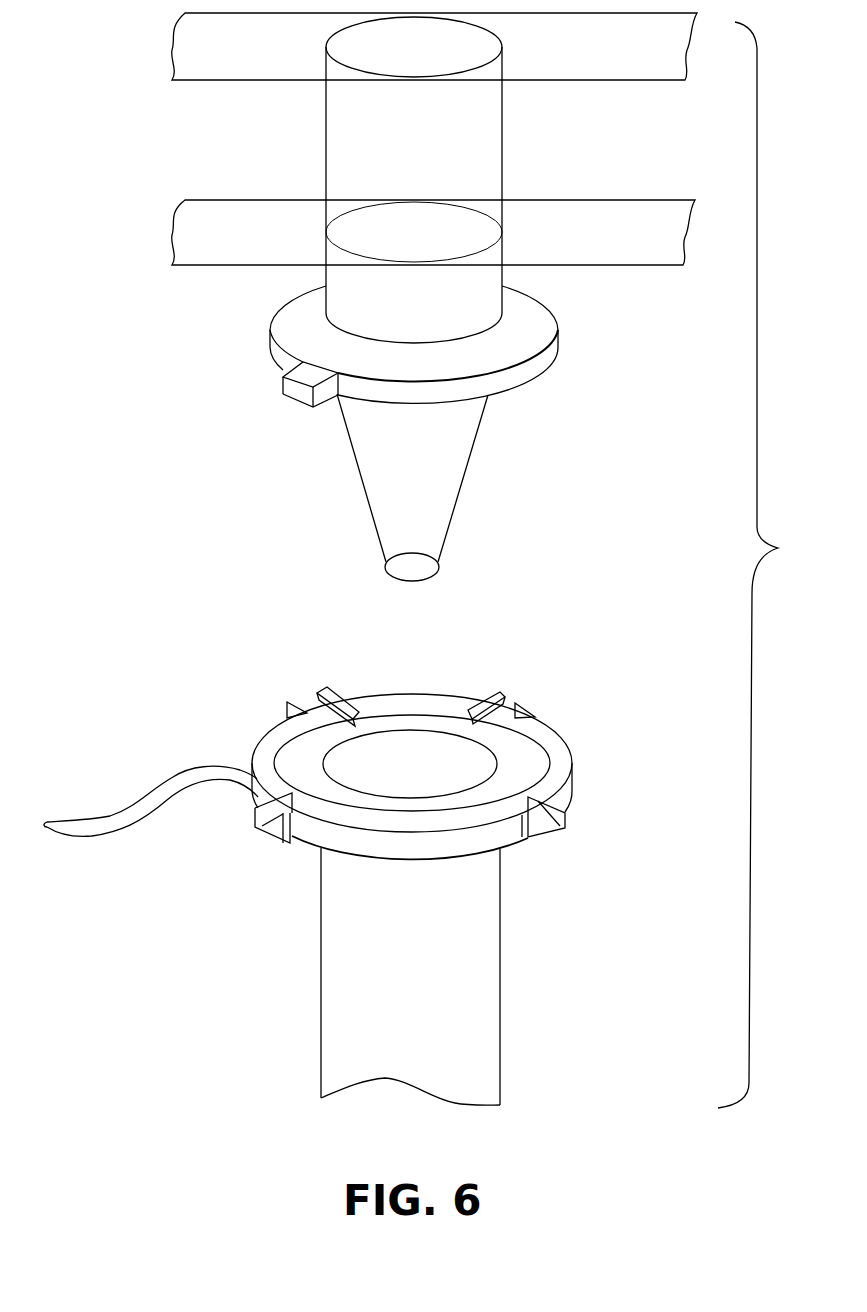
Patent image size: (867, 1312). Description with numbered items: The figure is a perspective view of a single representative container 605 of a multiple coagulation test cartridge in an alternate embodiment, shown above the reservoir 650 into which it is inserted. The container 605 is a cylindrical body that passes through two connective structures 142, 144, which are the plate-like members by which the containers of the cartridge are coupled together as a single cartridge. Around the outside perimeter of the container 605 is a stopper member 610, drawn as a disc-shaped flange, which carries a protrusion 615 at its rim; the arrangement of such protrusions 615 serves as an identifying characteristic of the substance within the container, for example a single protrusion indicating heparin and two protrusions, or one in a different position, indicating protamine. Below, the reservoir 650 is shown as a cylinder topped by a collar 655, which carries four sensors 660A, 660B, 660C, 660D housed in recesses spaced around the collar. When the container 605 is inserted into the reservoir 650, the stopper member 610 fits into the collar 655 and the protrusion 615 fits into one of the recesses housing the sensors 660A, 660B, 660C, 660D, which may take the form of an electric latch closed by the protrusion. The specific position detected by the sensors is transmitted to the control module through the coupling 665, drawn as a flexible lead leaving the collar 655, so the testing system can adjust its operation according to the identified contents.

The connective structure 142 is at (633, 58).
The connective structure 144 is at (640, 248).
The container 605 is at (428, 173).
The stopper member 610 is at (560, 337).
The protrusion 615 is at (283, 393).
The reservoir 650 is at (432, 950).
The collar 655 is at (553, 740).
The sensor 660A is at (255, 827).
The sensor 660B is at (307, 704).
The sensor 660C is at (512, 708).
The sensor 660D is at (565, 827).
The coupling 665 is at (183, 777).